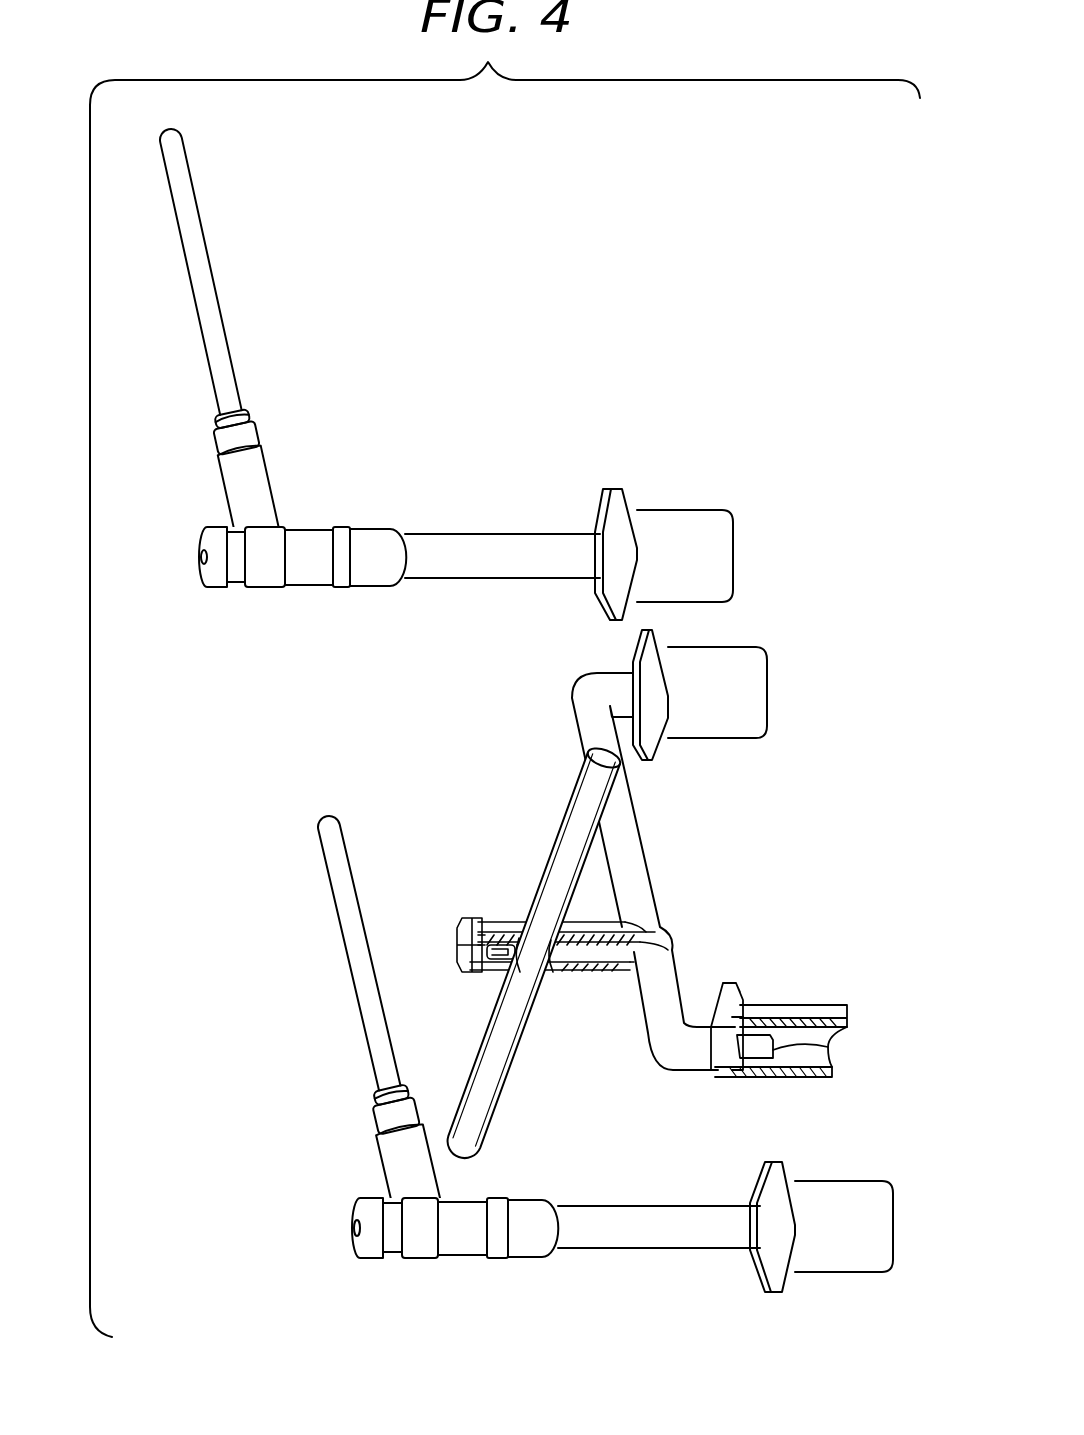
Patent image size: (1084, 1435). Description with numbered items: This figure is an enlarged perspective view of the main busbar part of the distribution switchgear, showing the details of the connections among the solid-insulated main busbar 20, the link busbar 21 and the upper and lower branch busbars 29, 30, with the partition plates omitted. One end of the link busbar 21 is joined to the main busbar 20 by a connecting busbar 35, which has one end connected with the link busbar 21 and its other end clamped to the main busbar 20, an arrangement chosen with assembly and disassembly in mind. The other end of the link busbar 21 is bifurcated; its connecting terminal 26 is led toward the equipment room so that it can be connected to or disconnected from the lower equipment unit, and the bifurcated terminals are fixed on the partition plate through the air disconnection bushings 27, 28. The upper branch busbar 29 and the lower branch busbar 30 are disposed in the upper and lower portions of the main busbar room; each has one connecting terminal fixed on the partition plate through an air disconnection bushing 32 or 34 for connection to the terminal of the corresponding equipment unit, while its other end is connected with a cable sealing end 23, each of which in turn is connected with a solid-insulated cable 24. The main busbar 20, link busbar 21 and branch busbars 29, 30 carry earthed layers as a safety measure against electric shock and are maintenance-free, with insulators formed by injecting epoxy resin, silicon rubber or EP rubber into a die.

The solid-insulated main busbar 20 is at (560, 822).
The solid-insulated link busbar 21 is at (641, 833).
The cable sealing end 23 is at (202, 532).
The solid-insulated cable 24 is at (181, 234).
The connecting terminal 26 is at (830, 1047).
The air disconnection bushing 27 is at (770, 675).
The air disconnection bushing 28 is at (800, 1005).
The upper branch busbar 29 is at (490, 533).
The lower branch busbar 30 is at (622, 1250).
The air disconnection bushing 32 is at (736, 530).
The air disconnection bushing 34 is at (862, 1180).
The connecting busbar 35 is at (592, 955).